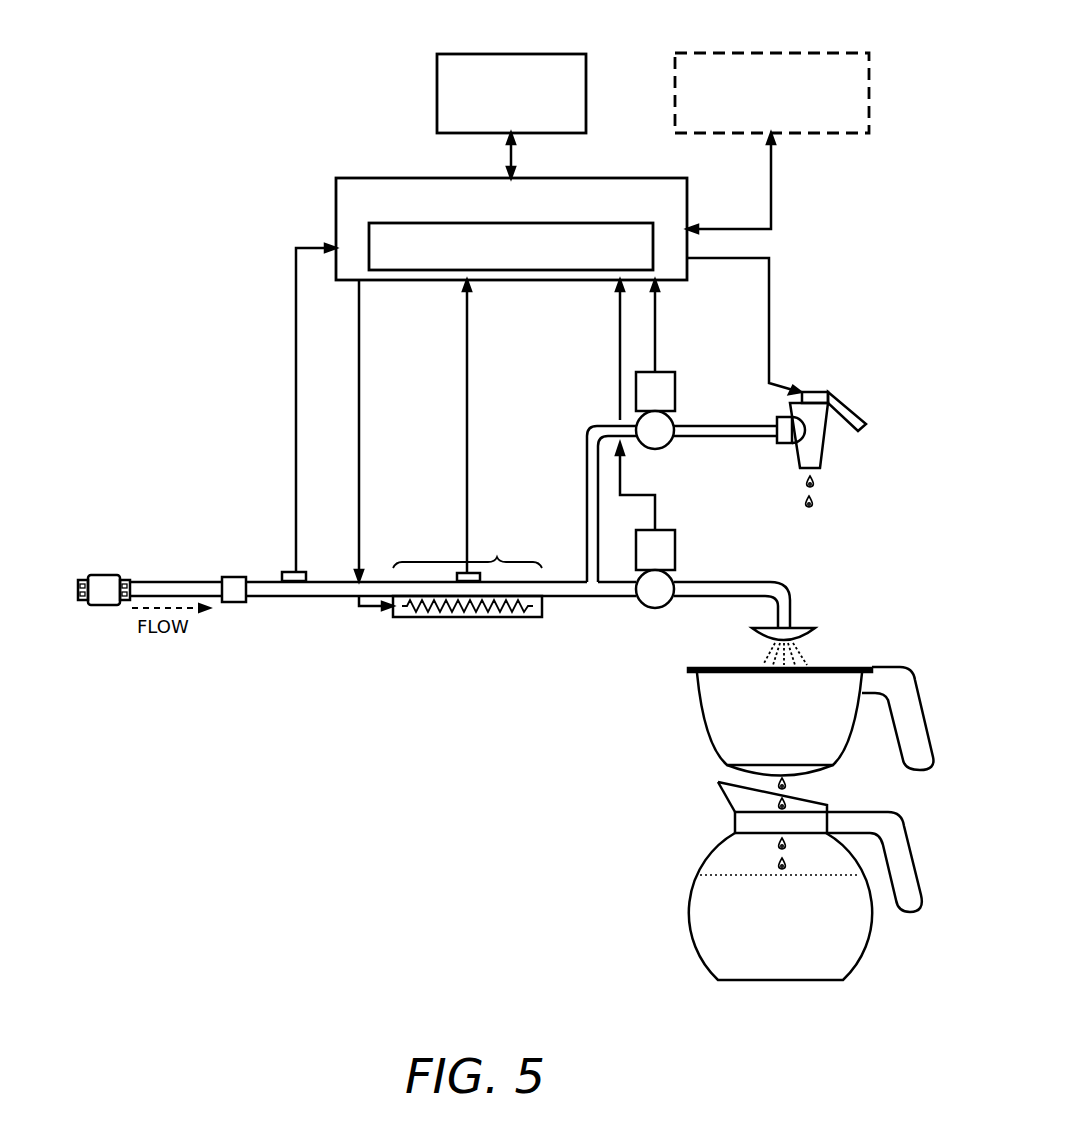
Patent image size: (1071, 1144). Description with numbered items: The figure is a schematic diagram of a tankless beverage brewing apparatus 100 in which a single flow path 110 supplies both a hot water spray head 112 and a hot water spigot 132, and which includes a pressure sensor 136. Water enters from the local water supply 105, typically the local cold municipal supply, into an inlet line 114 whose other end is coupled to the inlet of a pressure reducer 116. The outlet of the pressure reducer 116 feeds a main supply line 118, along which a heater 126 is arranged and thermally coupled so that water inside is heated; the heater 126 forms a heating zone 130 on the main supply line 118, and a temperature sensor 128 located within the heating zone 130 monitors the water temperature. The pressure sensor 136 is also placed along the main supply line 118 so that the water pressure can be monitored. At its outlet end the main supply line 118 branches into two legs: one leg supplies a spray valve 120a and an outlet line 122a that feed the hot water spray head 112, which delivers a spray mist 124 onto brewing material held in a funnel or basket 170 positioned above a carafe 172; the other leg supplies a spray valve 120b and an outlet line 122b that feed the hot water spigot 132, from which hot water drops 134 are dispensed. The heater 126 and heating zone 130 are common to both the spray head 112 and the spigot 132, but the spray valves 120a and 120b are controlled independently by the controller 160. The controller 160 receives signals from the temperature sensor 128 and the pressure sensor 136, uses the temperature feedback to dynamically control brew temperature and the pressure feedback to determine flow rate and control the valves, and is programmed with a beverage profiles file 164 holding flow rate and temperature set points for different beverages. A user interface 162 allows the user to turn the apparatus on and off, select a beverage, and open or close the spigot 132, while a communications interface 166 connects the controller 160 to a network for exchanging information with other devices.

The tankless beverage brewing apparatus 100 is at (231, 61).
The local water supply 105 is at (98, 575).
The flow path 110 is at (262, 616).
The hot water spray head 112 is at (803, 627).
The inlet line 114 is at (157, 581).
The pressure reducer 116 is at (233, 577).
The main supply line 118 is at (333, 581).
The spray valve 120a is at (675, 548).
The spray valve 120b is at (675, 392).
The outlet line 122a is at (687, 582).
The outlet line 122b is at (688, 422).
The spray mist 124 is at (808, 652).
The heater 126 is at (473, 618).
The temperature sensor 128 is at (455, 580).
The heating zone 130 is at (467, 552).
The hot water spigot 132 is at (817, 392).
The dispensed water drops 134 is at (817, 492).
The pressure sensor 136 is at (282, 572).
The controller 160 is at (511, 229).
The user interface 162 is at (511, 93).
The beverage profiles file 164 is at (511, 246).
The communications interface 166 is at (772, 93).
The funnel or basket 170 is at (810, 738).
The carafe 172 is at (805, 881).